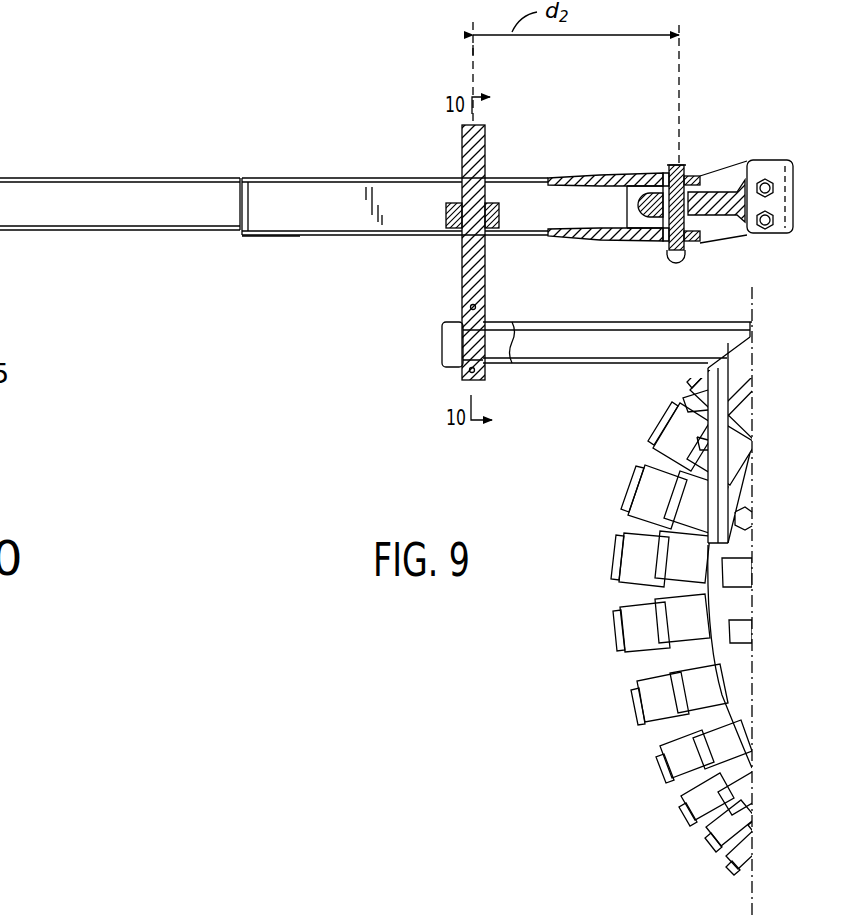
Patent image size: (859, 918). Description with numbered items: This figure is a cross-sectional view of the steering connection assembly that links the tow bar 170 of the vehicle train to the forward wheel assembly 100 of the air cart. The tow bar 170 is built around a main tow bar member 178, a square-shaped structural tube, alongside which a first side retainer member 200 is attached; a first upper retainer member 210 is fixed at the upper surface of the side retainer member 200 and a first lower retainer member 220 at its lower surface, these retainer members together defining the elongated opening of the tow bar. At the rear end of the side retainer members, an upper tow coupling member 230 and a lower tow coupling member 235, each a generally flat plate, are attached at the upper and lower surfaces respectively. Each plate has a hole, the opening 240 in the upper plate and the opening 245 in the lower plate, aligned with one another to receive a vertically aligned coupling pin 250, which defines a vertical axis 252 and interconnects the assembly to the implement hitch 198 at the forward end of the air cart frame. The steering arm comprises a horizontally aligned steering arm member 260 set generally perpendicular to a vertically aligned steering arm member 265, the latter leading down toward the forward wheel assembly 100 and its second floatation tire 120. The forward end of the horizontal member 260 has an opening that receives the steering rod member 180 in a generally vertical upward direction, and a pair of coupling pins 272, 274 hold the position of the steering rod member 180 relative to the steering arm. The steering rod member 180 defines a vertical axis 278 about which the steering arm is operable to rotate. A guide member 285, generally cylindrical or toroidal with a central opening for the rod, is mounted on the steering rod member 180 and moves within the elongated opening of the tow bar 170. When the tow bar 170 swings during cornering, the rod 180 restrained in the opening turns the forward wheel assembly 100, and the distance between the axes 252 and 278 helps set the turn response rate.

The forward wheel assembly 100 is at (545, 481).
The second floatation tire 120 is at (620, 548).
The tow bar 170 is at (60, 94).
The main tow bar member 178 is at (110, 178).
The steering rod member 180 is at (487, 140).
The implement hitch 198 is at (702, 176).
The first side retainer member 200 is at (262, 178).
The first upper retainer member 210 is at (348, 178).
The first lower retainer member 220 is at (258, 238).
The upper tow coupling member 230 is at (632, 173).
The lower tow coupling member 235 is at (580, 240).
The opening in upper tow coupling member 240 is at (690, 176).
The opening in lower tow coupling member 245 is at (700, 249).
The coupling pin 250 is at (683, 272).
The vertical axis 252 is at (678, 77).
The horizontally aligned steering arm member 260 is at (565, 320).
The vertically aligned steering arm member 265 is at (713, 418).
The coupling pin 272 is at (470, 307).
The coupling pin 274 is at (470, 371).
The vertical axis 278 is at (473, 50).
The guide member 285 is at (500, 212).